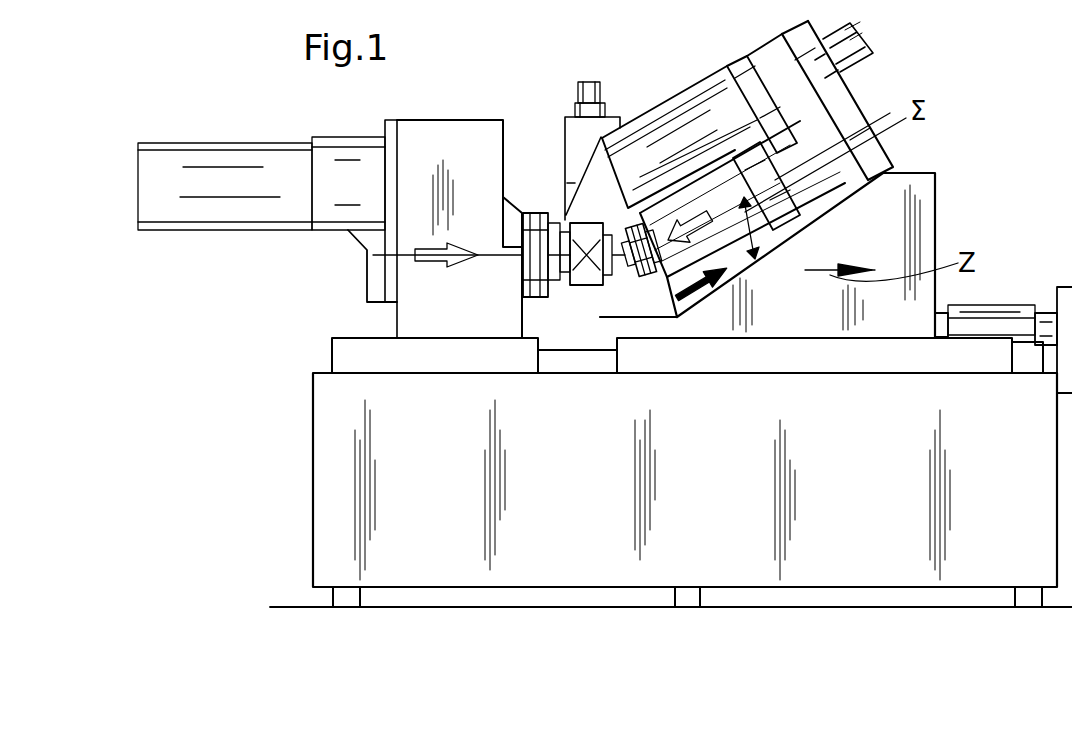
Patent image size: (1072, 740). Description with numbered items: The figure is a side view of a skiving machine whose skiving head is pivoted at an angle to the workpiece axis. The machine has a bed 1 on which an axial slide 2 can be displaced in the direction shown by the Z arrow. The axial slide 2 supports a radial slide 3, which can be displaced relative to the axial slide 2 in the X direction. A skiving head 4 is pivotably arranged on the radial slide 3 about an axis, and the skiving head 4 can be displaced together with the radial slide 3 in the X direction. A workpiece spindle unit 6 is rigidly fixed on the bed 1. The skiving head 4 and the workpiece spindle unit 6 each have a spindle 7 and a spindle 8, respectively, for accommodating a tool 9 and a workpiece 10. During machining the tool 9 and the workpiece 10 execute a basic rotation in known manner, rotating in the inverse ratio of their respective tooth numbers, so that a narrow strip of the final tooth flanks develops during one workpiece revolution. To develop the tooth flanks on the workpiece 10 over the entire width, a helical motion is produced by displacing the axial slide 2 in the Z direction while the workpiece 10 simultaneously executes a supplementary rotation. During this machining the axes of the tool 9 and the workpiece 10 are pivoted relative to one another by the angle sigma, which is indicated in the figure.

The bed 1 is at (333, 473).
The axial slide 2 is at (925, 222).
The radial slide 3 is at (573, 145).
The skiving head 4 is at (656, 112).
The workpiece spindle unit 6 is at (447, 138).
The spindle 7 is at (663, 277).
The spindle 8 is at (562, 277).
The tool 9 is at (643, 283).
The workpiece 10 is at (585, 287).